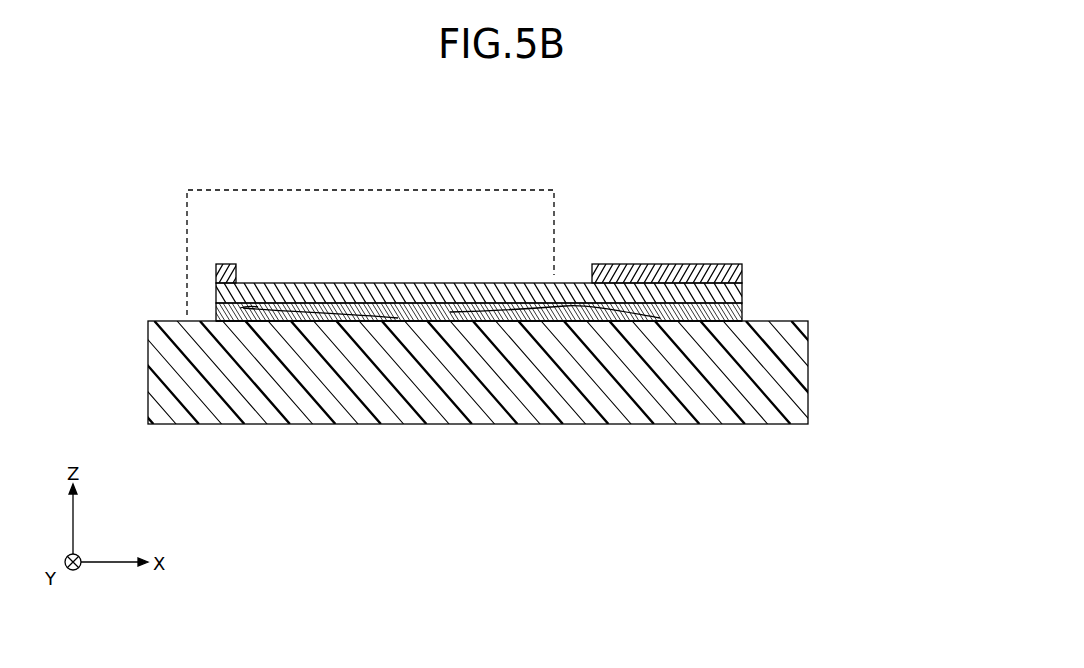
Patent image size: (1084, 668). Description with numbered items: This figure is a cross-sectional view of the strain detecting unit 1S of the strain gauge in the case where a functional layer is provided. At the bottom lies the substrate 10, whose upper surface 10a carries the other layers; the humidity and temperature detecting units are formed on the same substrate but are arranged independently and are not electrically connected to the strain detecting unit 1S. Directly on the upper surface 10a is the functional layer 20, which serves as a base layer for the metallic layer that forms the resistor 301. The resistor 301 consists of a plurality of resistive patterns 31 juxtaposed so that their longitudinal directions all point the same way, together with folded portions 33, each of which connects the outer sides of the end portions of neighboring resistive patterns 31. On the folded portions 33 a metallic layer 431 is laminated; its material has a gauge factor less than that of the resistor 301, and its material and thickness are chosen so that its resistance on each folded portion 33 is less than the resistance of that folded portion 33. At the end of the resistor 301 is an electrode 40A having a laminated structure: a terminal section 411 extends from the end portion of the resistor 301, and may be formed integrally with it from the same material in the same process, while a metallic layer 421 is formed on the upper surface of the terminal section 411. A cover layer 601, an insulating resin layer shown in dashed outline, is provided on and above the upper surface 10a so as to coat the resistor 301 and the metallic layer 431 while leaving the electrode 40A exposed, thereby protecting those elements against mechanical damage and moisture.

The strain detecting unit 1S is at (78, 184).
The substrate 10 is at (168, 371).
The upper surface of the substrate 10a is at (218, 320).
The functional layer 20 is at (216, 305).
The resistor 301 is at (430, 466).
The resistive pattern 31 is at (243, 307).
The folded portion 33 is at (250, 307).
The electrode 40A is at (895, 238).
The terminal section 411 is at (413, 335).
The metallic layer 421 is at (688, 268).
The metallic layer 431 is at (225, 263).
The cover layer 601 is at (460, 186).